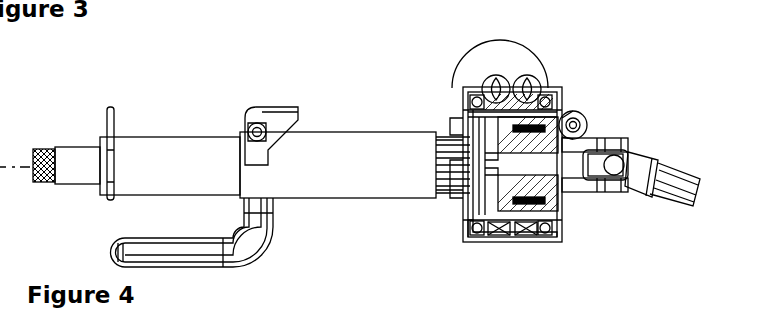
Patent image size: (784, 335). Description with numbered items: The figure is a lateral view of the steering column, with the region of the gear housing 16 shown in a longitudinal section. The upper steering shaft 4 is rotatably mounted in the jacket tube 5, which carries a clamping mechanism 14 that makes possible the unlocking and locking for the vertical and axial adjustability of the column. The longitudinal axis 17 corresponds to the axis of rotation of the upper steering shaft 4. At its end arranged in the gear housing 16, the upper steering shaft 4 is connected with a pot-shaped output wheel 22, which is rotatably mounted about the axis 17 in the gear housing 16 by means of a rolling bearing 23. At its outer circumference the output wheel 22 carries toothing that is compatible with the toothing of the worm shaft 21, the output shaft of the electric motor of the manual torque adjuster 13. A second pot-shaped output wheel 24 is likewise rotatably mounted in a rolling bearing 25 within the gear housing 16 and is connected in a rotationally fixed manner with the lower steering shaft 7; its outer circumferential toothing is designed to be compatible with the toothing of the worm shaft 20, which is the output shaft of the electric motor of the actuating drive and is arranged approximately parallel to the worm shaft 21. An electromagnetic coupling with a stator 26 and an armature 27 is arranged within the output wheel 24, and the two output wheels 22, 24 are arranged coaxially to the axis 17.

The upper steering shaft 4 is at (78, 158).
The jacket tube 5 is at (152, 152).
The lower steering shaft 7 is at (577, 170).
The manual torque adjuster 13 is at (475, 67).
The clamping mechanism 14 is at (272, 118).
The gear housing 16 is at (473, 240).
The longitudinal axis 17 is at (0, 166).
The worm shaft 20 is at (535, 86).
The worm shaft 21 is at (498, 78).
The pot-shaped output wheel 22 is at (505, 234).
The rolling bearing 23 is at (455, 230).
The second pot-shaped output wheel 24 is at (524, 233).
The rolling bearing 25 is at (548, 238).
The stator 26 is at (561, 117).
The armature 27 is at (453, 108).